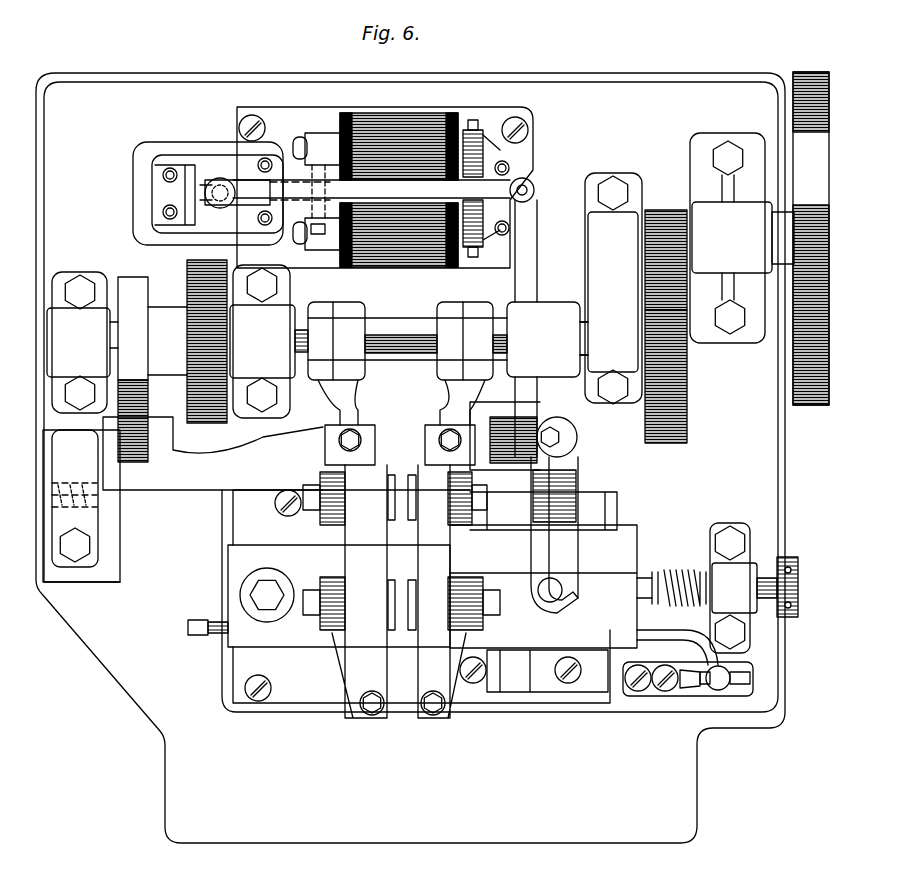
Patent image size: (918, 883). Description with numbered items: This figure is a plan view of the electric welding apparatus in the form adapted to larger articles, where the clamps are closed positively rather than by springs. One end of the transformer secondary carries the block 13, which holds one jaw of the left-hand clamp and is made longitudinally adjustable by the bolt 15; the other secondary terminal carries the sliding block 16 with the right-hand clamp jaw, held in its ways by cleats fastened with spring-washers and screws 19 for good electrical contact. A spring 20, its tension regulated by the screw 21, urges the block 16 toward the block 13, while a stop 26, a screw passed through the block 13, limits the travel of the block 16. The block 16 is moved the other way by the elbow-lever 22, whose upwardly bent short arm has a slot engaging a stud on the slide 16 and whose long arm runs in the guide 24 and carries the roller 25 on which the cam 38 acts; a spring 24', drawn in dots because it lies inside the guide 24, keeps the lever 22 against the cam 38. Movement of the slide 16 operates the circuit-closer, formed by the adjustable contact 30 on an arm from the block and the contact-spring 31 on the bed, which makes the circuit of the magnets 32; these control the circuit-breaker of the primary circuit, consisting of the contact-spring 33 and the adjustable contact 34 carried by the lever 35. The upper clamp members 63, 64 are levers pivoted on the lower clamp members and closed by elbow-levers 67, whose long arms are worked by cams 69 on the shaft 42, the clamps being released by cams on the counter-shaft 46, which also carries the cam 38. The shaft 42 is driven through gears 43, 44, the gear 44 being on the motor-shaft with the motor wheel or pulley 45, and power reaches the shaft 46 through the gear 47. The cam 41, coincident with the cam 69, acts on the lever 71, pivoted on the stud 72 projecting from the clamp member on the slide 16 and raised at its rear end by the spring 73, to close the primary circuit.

The block 13 is at (232, 633).
The bolt 15 is at (263, 585).
The block 16 is at (625, 555).
The spring-washers and screws 19 is at (603, 515).
The spring 20 is at (672, 572).
The screw 21 is at (796, 580).
The elbow-lever 22 is at (202, 487).
The guide 24 is at (104, 506).
The spring 24' is at (104, 500).
The roller 25 is at (140, 424).
The stop 26 is at (203, 620).
The adjustable contact 30 is at (752, 676).
The contact-spring 31 is at (688, 692).
The magnets 32 is at (395, 125).
The contact-spring 33 is at (240, 180).
The adjustable contact 34 is at (215, 185).
The lever 35 is at (423, 200).
The cam 38 is at (130, 277).
The cam 41 is at (528, 360).
The shaft 42 is at (405, 318).
The gear 43 is at (690, 420).
The gear 44 is at (665, 212).
The motor wheel or pulley 45 is at (805, 72).
The shaft 46 is at (47, 354).
The gear 47 is at (190, 268).
The upper clamp member 63 is at (349, 591).
The upper clamp member 64 is at (454, 591).
The elbow-levers 67 is at (401, 422).
The cams 69 is at (352, 306).
The lever 71 is at (538, 288).
The stud 72 is at (554, 515).
The spring 73 is at (500, 416).